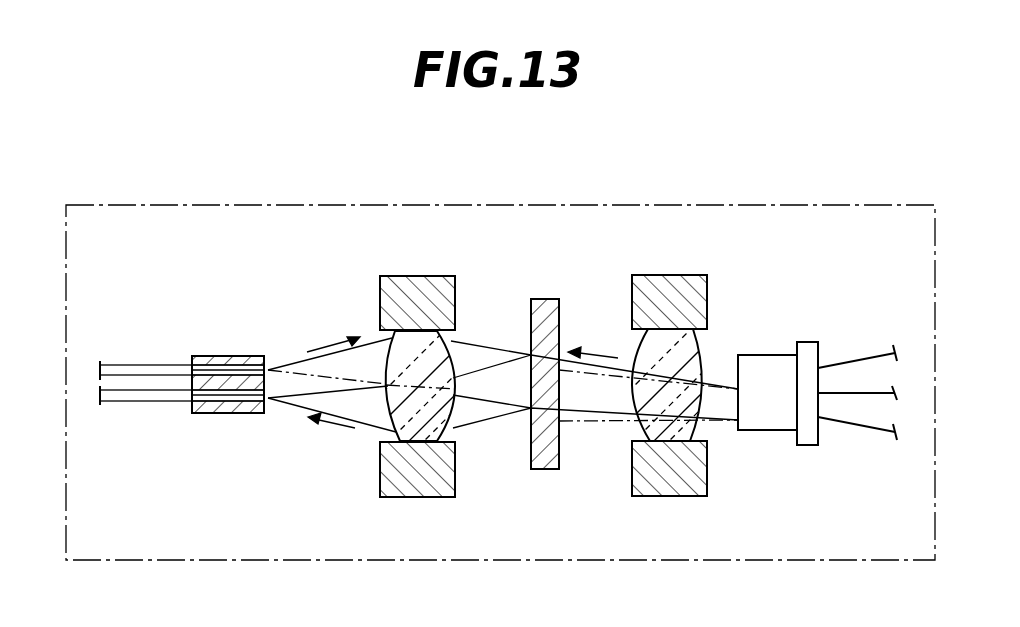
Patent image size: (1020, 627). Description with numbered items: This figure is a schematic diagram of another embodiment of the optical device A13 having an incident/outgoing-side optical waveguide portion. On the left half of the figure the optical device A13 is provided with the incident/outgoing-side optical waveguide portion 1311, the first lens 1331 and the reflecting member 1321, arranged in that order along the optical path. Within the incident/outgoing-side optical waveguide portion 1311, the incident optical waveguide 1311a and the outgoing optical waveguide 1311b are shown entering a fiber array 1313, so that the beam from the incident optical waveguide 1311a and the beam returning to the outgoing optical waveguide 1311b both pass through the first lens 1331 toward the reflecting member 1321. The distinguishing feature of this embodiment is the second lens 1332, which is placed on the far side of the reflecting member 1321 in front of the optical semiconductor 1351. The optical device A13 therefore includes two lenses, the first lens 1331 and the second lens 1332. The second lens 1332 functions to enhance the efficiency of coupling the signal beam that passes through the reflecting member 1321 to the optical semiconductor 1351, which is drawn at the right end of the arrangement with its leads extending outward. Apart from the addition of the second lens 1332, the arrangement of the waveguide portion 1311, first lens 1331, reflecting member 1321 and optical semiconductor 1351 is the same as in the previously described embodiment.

The optical device A13 is at (681, 205).
The incident/outgoing-side optical waveguide portion 1311 is at (188, 368).
The incident optical waveguide 1311a is at (140, 365).
The outgoing optical waveguide 1311b is at (158, 401).
The fiber array 1313 is at (233, 356).
The first lens 1331 is at (392, 345).
The reflecting member 1321 is at (531, 330).
The second lens 1332 is at (640, 352).
The optical semiconductor 1351 is at (755, 355).